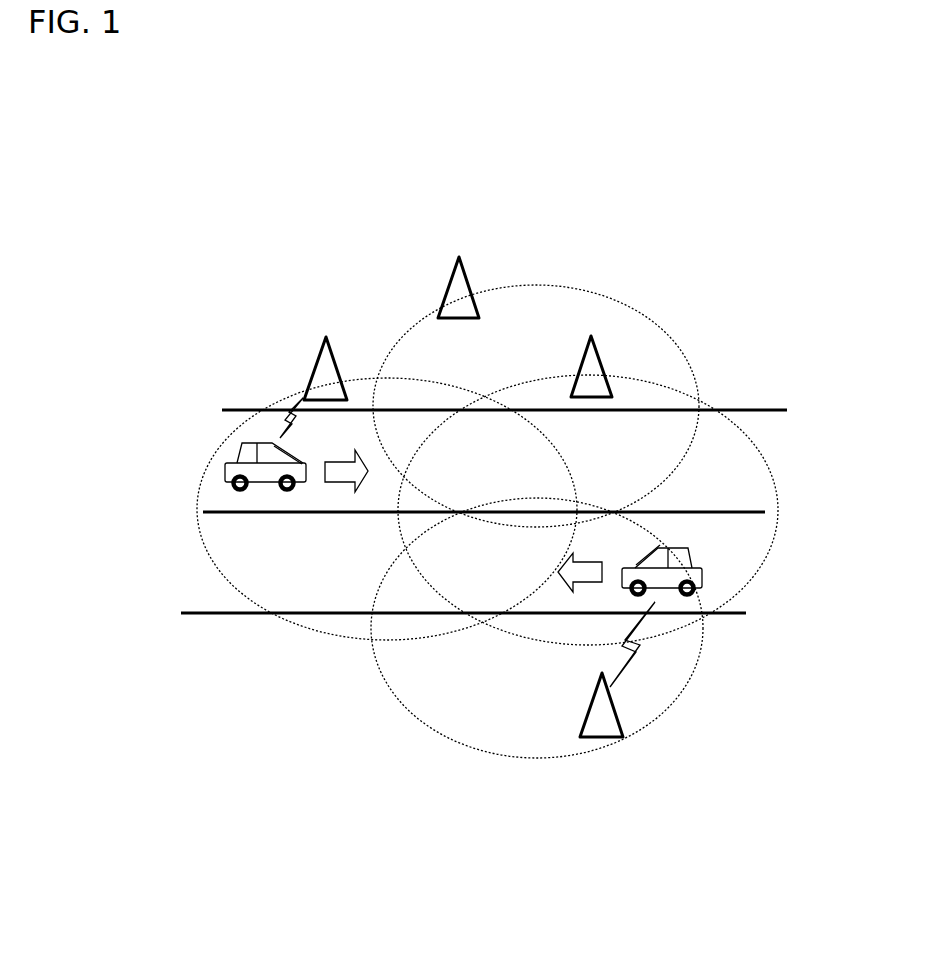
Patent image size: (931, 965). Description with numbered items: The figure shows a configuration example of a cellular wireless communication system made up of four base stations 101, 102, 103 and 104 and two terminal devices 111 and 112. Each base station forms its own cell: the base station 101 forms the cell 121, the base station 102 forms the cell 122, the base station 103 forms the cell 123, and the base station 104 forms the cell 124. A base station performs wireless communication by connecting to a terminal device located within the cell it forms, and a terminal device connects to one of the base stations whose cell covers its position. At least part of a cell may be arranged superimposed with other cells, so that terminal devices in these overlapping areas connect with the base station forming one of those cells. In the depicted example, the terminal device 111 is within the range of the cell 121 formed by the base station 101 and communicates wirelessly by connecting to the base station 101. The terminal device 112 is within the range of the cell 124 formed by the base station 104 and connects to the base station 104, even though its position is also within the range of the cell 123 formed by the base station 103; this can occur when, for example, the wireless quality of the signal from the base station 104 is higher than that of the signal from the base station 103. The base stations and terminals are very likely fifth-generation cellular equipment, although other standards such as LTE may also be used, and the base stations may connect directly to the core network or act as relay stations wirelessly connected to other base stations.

The base station 101 is at (327, 367).
The base station 102 is at (458, 295).
The base station 103 is at (603, 372).
The base station 104 is at (598, 725).
The terminal device 111 is at (228, 472).
The terminal device 112 is at (702, 572).
The cell 121 is at (313, 635).
The cell 122 is at (590, 290).
The cell 123 is at (777, 480).
The cell 124 is at (430, 725).